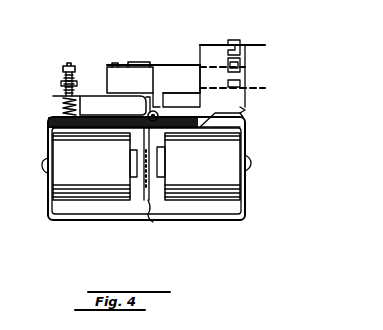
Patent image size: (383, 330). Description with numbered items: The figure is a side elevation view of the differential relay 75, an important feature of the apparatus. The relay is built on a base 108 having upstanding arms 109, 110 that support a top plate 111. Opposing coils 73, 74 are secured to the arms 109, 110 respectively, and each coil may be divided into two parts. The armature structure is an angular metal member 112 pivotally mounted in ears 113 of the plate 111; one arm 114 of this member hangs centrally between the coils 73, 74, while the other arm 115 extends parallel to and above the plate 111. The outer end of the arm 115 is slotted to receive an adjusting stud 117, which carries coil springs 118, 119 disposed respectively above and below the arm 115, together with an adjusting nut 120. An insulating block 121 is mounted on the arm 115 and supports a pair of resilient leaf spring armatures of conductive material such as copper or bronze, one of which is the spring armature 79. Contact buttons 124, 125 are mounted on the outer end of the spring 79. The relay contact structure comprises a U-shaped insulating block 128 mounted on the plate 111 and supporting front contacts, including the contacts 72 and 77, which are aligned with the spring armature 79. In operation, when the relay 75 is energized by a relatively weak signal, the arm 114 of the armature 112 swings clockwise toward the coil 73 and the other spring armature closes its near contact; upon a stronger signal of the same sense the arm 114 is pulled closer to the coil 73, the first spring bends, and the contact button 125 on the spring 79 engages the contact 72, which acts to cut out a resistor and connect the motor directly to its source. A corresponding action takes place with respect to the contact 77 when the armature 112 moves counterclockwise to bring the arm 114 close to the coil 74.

The front contact 72 is at (248, 88).
The coil 73 is at (60, 146).
The coil 74 is at (225, 203).
The differential relay 75 is at (273, 146).
The front contact 77 is at (245, 43).
The resilient leaf spring armature 79 is at (200, 64).
The base 108 is at (116, 222).
The upstanding arm 109 is at (58, 198).
The upstanding arm 110 is at (247, 192).
The top plate 111 is at (58, 125).
The angular metal member 112 is at (157, 95).
The ears 113 is at (161, 108).
The arm 114 is at (153, 222).
The arm 115 is at (91, 96).
The adjusting stud 117 is at (70, 64).
The coil spring 118 is at (62, 83).
The coil spring 119 is at (62, 99).
The adjusting nut 120 is at (67, 65).
The insulating block 121 is at (123, 78).
The contact button 124 is at (245, 58).
The contact button 125 is at (246, 66).
The U-shaped insulating block 128 is at (246, 107).